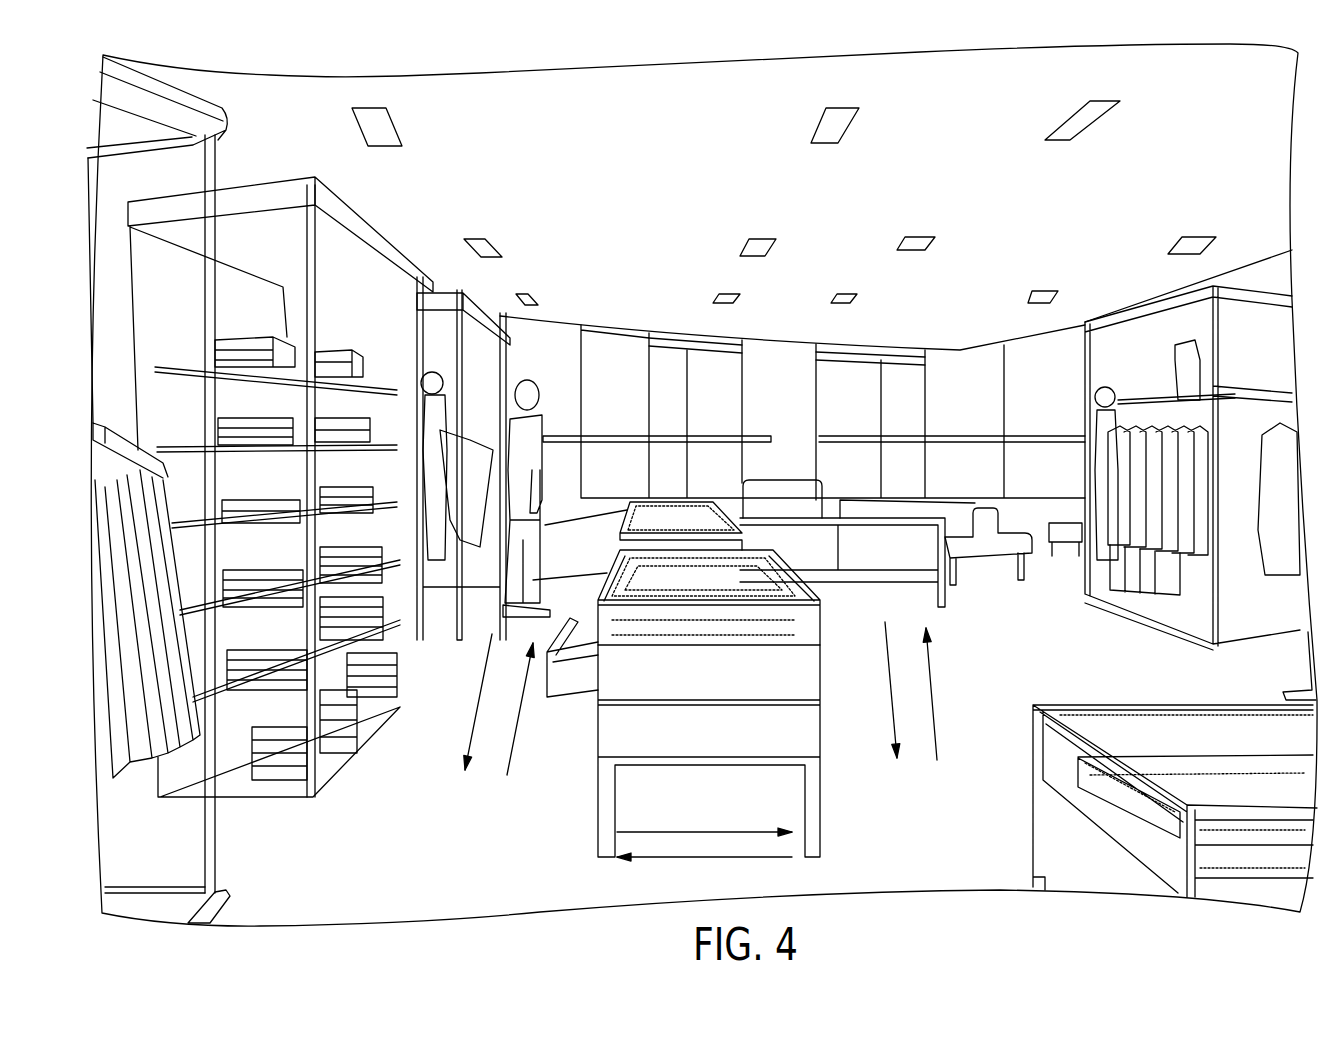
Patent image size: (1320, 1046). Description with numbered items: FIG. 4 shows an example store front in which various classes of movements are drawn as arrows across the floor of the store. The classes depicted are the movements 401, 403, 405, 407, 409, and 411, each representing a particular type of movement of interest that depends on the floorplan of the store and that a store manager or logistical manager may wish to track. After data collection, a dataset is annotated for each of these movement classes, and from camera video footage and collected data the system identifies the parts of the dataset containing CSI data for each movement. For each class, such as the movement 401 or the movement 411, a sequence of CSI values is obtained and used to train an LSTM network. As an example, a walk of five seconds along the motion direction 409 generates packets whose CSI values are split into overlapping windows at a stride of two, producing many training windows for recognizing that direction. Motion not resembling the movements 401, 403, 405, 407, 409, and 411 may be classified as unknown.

The movement 401 is at (935, 708).
The movement 403 is at (890, 704).
The movement 405 is at (713, 829).
The movement 407 is at (697, 858).
The motion direction 409 is at (522, 715).
The movement 411 is at (470, 732).